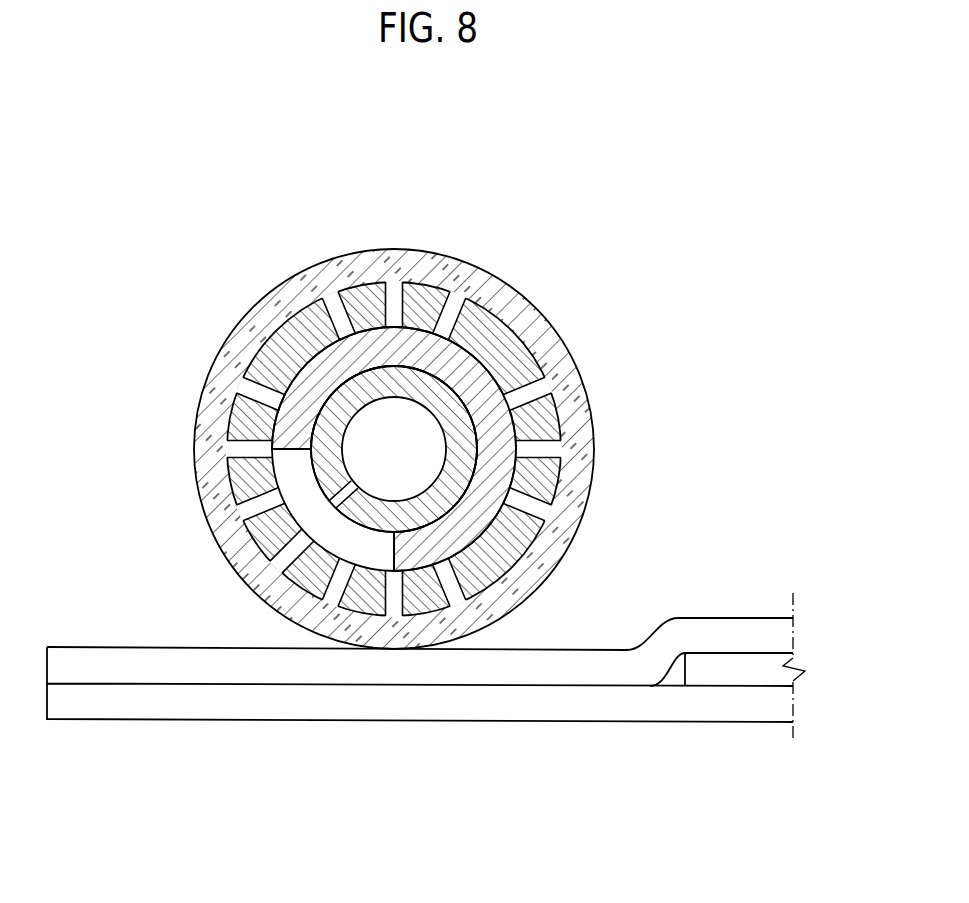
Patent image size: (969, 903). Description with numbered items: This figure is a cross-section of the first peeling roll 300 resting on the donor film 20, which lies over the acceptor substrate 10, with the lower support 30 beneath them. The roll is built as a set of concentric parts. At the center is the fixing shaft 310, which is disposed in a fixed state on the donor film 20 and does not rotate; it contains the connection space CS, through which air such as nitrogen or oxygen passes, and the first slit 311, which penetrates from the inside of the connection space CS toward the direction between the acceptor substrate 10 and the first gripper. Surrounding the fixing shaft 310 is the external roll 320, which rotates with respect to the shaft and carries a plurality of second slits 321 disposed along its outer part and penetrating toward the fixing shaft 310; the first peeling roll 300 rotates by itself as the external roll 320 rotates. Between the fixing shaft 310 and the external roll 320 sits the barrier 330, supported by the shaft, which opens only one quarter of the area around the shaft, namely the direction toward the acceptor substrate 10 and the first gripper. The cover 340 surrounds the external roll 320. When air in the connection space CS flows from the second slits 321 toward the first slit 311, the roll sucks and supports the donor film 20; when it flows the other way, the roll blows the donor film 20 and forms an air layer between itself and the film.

The first peeling roll 300 is at (545, 278).
The fixing shaft 310 is at (383, 393).
The first slit 311 is at (400, 533).
The external roll 320 is at (520, 347).
The second slit 321 is at (540, 388).
The barrier 330 is at (497, 470).
The cover 340 is at (590, 436).
The connection space CS is at (390, 441).
The acceptor substrate 10 is at (755, 668).
The donor film 20 is at (709, 628).
The lower support 30 is at (706, 713).